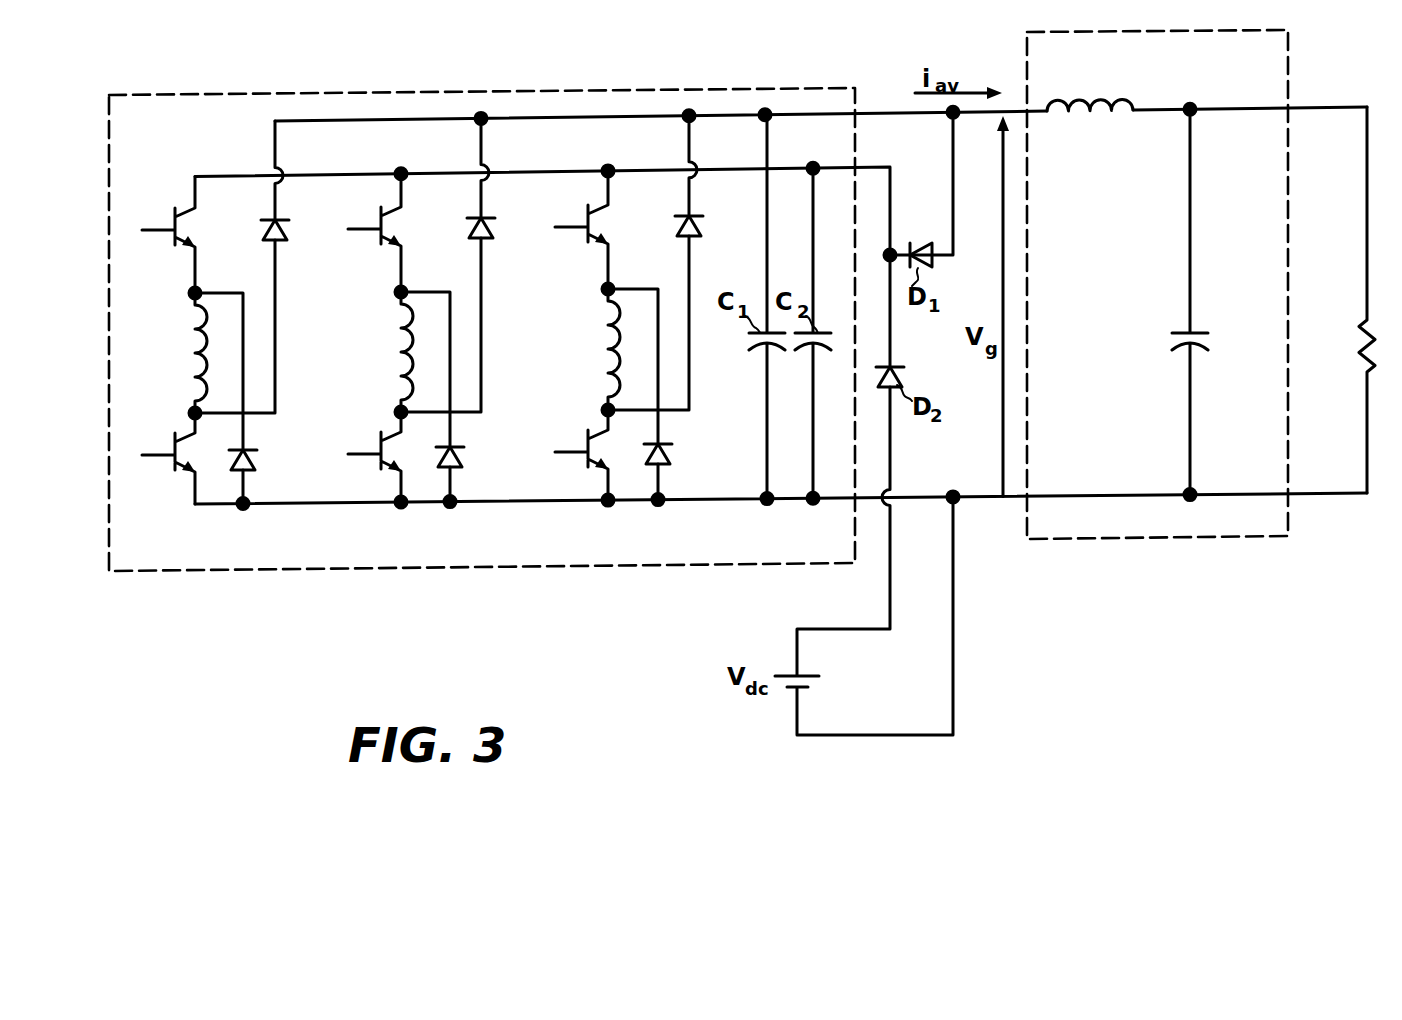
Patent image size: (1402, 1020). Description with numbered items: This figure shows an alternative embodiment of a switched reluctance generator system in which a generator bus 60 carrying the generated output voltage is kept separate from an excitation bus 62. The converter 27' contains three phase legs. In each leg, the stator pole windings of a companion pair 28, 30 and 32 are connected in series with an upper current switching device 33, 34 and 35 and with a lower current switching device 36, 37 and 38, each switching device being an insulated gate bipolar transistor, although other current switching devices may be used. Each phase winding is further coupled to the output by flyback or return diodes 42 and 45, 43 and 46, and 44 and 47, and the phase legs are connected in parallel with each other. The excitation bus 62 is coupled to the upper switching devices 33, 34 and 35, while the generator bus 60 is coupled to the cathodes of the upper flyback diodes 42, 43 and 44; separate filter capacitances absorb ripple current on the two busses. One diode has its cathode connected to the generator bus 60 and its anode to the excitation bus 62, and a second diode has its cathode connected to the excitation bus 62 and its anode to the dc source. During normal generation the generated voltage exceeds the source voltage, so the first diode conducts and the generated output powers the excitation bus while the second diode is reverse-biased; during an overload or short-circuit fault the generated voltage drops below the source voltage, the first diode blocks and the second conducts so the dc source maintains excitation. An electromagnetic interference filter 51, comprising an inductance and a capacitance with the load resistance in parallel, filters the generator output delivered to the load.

The converter 27' is at (482, 313).
The companion pair of stator pole windings 28 is at (195, 357).
The companion pair of stator pole windings 30 is at (401, 357).
The companion pair of stator pole windings 32 is at (608, 351).
The upper current switching device 33 is at (175, 212).
The upper current switching device 34 is at (382, 212).
The upper current switching device 35 is at (589, 210).
The lower current switching device 36 is at (178, 439).
The lower current switching device 37 is at (388, 438).
The lower current switching device 38 is at (595, 438).
The upper flyback diode 42 is at (283, 232).
The upper flyback diode 43 is at (489, 230).
The upper flyback diode 44 is at (697, 228).
The lower flyback diode 45 is at (250, 462).
The lower flyback diode 46 is at (455, 462).
The lower flyback diode 47 is at (665, 458).
The electromagnetic interference filter 51 is at (1255, 538).
The generator bus 60 is at (883, 112).
The excitation bus 62 is at (205, 176).